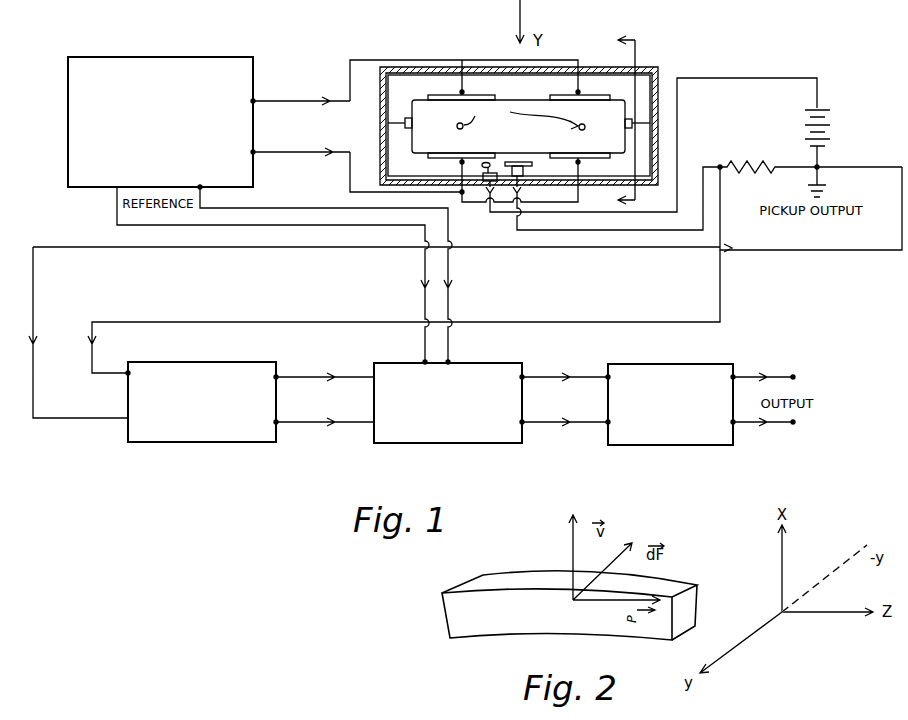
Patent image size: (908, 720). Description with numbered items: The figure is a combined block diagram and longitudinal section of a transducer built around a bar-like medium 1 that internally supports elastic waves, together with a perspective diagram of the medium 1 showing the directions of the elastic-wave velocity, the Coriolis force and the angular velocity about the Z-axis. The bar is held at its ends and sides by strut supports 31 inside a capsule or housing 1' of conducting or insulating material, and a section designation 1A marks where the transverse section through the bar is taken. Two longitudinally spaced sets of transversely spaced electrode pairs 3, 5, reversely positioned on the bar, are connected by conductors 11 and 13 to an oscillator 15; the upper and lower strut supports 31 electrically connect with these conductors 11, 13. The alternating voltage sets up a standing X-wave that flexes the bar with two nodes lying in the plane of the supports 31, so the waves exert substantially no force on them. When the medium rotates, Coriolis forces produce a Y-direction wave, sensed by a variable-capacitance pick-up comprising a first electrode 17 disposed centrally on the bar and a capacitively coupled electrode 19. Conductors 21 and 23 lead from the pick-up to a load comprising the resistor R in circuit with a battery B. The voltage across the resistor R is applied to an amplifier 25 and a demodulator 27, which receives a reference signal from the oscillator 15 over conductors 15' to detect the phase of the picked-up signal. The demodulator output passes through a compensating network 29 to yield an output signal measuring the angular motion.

In FIG. 1, the medium 1 is at (519, 116).
In FIG. 2, the medium 1 is at (569, 592).
In FIG. 1, the section view designation 1A is at (616, 122).
In FIG. 1, the capsule or housing 1' is at (526, 135).
In FIG. 1, the electrodes 3 is at (440, 95).
In FIG. 1, the electrodes 5 is at (437, 158).
In FIG. 1, the conductor 11 is at (290, 102).
In FIG. 1, the conductor 13 is at (293, 153).
In FIG. 1, the oscillator 15 is at (160, 111).
In FIG. 1, the conductors 15' is at (435, 300).
In FIG. 1, the first electrode 17 is at (497, 163).
In FIG. 1, the capacitively coupled electrode 19 is at (530, 168).
In FIG. 1, the conductor 21 is at (560, 214).
In FIG. 1, the conductor 23 is at (623, 232).
In FIG. 1, the amplifier 25 is at (224, 422).
In FIG. 1, the demodulator 27 is at (480, 437).
In FIG. 1, the compensating network 29 is at (676, 437).
In FIG. 1, the strut supports 31 is at (458, 82).
In FIG. 1, the battery B is at (822, 108).
In FIG. 1, the resistor R is at (728, 162).